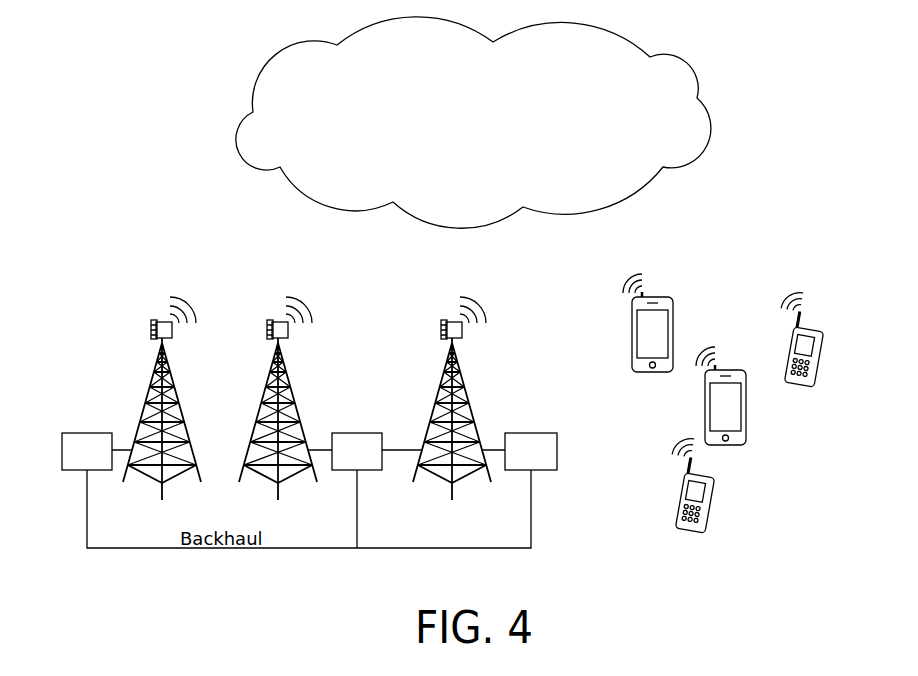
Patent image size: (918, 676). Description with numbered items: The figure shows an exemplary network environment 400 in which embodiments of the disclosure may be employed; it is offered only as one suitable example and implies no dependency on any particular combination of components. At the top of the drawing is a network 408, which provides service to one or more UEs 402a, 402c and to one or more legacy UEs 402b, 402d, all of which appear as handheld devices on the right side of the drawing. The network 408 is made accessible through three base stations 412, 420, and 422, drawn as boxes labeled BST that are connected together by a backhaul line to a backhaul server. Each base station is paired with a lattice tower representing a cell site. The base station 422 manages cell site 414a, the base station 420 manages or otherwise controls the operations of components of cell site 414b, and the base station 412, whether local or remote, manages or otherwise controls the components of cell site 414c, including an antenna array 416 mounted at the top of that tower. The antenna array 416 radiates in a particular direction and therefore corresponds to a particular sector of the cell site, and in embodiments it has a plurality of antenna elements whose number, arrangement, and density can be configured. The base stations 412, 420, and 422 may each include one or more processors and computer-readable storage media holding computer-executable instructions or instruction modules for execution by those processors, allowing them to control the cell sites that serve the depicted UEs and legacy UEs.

The network environment 400 is at (68, 86).
The network 408 is at (458, 132).
The cell site 414a is at (152, 386).
The cell site 414b is at (268, 386).
The cell site 414c is at (448, 398).
The antenna array 416 is at (464, 329).
The base station 422 is at (85, 433).
The base station 420 is at (356, 433).
The base station 412 is at (530, 433).
The UE 402a is at (674, 330).
The legacy UE 402b is at (824, 362).
The UE 402c is at (748, 410).
The legacy UE 402d is at (714, 500).